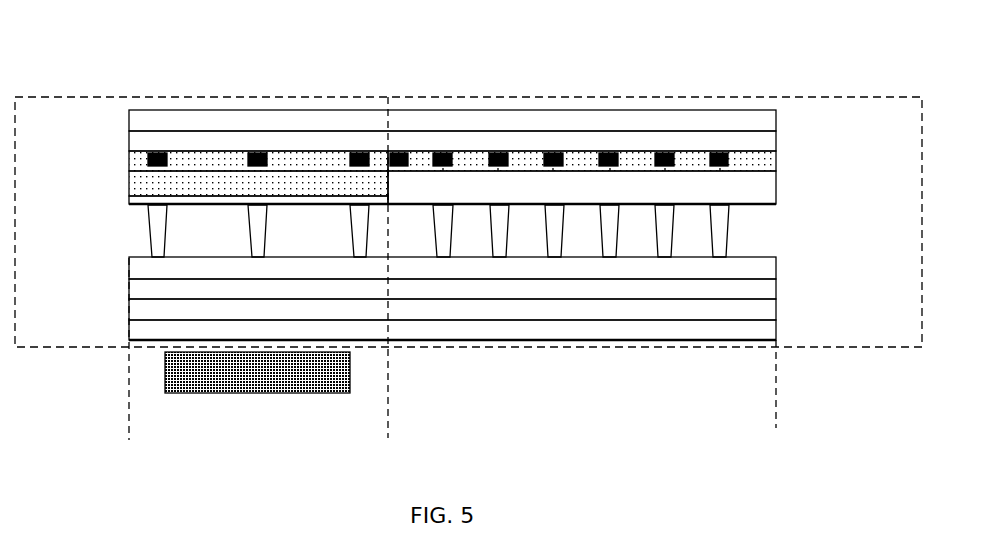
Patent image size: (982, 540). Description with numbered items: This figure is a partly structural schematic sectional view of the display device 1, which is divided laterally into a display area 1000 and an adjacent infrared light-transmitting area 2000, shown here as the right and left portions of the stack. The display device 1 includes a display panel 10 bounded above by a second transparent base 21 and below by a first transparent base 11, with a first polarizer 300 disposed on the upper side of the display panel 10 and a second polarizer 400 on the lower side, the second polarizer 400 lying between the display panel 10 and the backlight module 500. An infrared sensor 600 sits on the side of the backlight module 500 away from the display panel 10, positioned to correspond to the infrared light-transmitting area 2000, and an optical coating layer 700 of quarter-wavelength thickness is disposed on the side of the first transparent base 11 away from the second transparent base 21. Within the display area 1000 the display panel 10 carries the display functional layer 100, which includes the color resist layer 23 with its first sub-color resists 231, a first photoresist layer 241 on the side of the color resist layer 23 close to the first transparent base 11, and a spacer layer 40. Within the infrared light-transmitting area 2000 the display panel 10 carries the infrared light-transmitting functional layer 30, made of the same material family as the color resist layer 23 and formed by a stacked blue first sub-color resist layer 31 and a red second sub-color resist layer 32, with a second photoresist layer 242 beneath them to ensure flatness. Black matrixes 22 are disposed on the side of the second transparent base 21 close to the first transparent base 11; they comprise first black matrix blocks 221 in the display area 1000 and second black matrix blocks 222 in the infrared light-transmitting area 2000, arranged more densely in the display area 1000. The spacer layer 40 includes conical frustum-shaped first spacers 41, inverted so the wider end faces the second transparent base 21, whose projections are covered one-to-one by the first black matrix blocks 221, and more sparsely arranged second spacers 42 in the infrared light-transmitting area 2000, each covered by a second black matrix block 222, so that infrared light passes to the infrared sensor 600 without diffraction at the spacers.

The display device 1 is at (83, 47).
The display panel 10 is at (794, 358).
The display functional layer 100 is at (528, 159).
The first transparent base 11 is at (776, 266).
The second transparent base 21 is at (776, 134).
The black matrixes 22 is at (564, 116).
The first black matrix blocks 221 is at (546, 116).
The second black matrix blocks 222 is at (260, 152).
The color resist layer 23 is at (635, 185).
The first sub-color resist 231 is at (776, 166).
The first photoresist layer 241 is at (776, 197).
The second photoresist layer 242 is at (129, 198).
The spacer layer 40 is at (657, 231).
The first spacers 41 is at (728, 224).
The second spacers 42 is at (150, 233).
The infrared light-transmitting functional layer 30 is at (202, 173).
The first sub-color resist layer 31 is at (129, 178).
The second sub-color resist layer 32 is at (129, 158).
The first polarizer 300 is at (129, 118).
The second polarizer 400 is at (129, 282).
The backlight module 500 is at (129, 304).
The infrared sensor 600 is at (165, 372).
The optical coating layer 700 is at (776, 329).
The display area 1000 is at (762, 420).
The infrared light-transmitting area 2000 is at (374, 420).